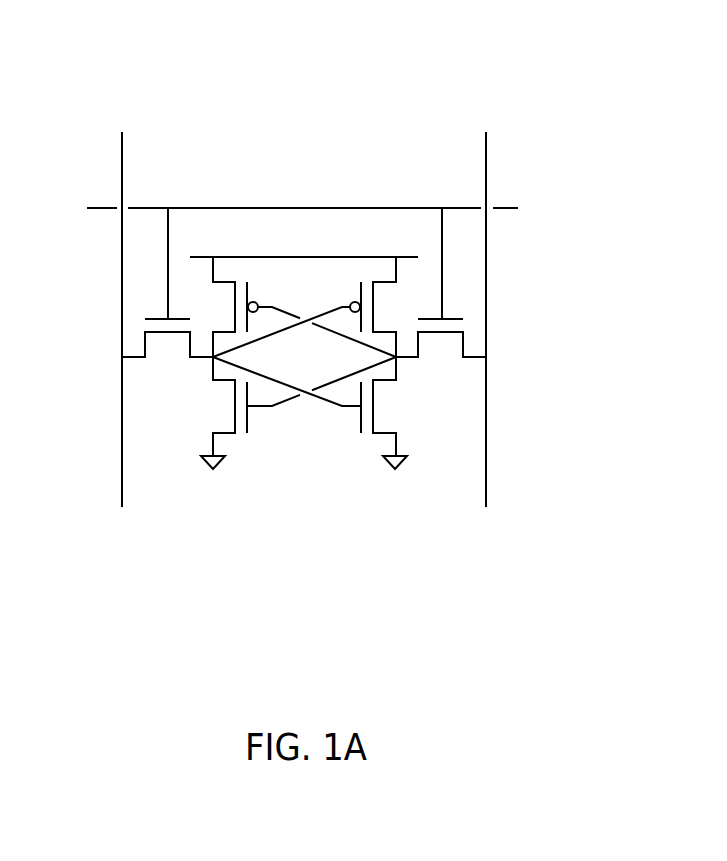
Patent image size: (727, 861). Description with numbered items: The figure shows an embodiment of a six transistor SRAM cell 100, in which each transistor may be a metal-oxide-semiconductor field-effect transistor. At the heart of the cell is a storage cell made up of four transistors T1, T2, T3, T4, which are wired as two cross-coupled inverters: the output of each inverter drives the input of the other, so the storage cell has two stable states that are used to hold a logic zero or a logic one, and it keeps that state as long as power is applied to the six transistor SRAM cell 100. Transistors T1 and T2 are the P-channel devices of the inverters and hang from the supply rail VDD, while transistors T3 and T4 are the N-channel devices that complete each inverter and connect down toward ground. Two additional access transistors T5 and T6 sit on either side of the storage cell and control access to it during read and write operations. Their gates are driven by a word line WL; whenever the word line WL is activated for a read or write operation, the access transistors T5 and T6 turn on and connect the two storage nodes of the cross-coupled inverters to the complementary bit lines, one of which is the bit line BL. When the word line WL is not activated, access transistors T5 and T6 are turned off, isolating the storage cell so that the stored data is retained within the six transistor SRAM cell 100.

The six transistor (6T) SRAM cell 100 is at (308, 261).
The bit line BL is at (123, 302).
The word line WL is at (265, 210).
The supply voltage rail VDD is at (304, 246).
The transistor T1 is at (297, 307).
The transistor T2 is at (315, 307).
The transistor T3 is at (292, 413).
The transistor T4 is at (315, 413).
The access transistor T5 is at (167, 282).
The access transistor T6 is at (441, 282).